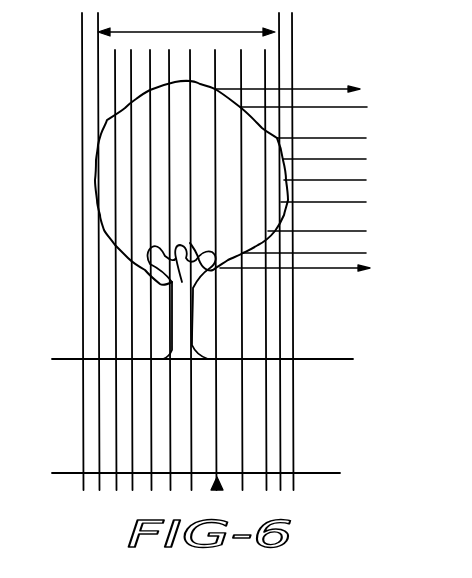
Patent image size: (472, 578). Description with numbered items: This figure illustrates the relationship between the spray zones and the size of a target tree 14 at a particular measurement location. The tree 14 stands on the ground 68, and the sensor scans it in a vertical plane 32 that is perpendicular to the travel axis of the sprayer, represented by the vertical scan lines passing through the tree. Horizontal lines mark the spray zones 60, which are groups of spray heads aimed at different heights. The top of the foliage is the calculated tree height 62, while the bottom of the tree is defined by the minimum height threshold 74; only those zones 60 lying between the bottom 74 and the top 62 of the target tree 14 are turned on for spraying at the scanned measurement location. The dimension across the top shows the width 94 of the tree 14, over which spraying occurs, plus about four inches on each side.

The target tree 14 is at (104, 161).
The vertical plane 32 is at (150, 490).
The spray zones 60 is at (355, 124).
The tree foliage height 62 is at (352, 90).
The ground 68 is at (338, 359).
The minimum height threshold 74 is at (343, 272).
The width of the tree 94 is at (185, 10).